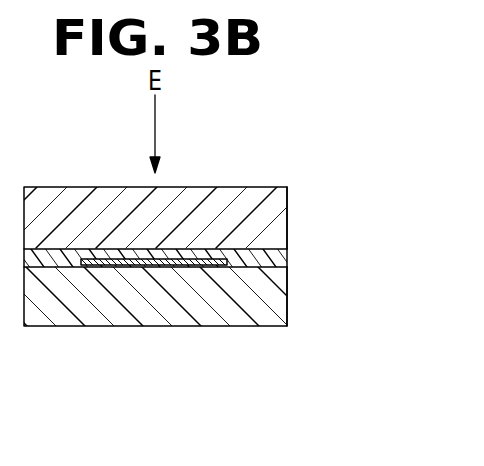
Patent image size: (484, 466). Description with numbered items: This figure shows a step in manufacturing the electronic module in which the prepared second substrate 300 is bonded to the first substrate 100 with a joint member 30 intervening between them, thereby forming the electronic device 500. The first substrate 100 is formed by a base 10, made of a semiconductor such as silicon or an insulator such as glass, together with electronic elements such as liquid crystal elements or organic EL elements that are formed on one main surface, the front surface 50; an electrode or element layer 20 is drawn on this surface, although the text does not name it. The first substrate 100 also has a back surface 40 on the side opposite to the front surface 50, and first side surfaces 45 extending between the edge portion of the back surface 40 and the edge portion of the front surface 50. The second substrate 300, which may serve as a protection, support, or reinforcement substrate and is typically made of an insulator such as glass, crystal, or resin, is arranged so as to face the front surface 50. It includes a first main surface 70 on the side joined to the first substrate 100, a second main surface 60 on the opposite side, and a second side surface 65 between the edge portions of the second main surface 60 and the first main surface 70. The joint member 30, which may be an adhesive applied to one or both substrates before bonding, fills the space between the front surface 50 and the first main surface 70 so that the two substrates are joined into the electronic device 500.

The base 10 is at (124, 300).
The functional layer 20 is at (196, 256).
The joint member 30 is at (253, 257).
The back surface 40 is at (267, 326).
The first side surfaces 45 is at (287, 297).
The front surface 50 is at (275, 262).
The second main surface 60 is at (228, 187).
The second side surface 65 is at (287, 213).
The first main surface 70 is at (99, 255).
The first substrate 100 is at (222, 358).
The second substrate 300 is at (55, 218).
The electronic device 500 is at (275, 405).